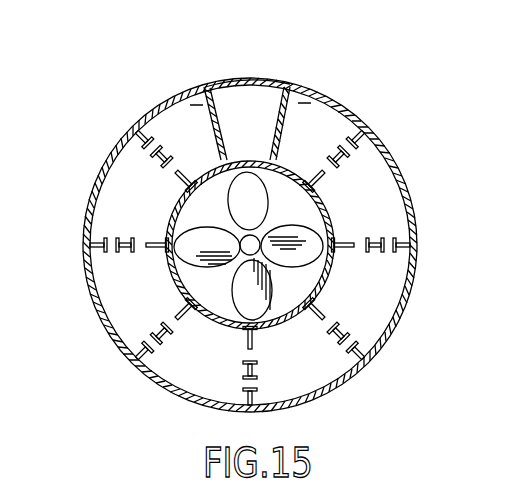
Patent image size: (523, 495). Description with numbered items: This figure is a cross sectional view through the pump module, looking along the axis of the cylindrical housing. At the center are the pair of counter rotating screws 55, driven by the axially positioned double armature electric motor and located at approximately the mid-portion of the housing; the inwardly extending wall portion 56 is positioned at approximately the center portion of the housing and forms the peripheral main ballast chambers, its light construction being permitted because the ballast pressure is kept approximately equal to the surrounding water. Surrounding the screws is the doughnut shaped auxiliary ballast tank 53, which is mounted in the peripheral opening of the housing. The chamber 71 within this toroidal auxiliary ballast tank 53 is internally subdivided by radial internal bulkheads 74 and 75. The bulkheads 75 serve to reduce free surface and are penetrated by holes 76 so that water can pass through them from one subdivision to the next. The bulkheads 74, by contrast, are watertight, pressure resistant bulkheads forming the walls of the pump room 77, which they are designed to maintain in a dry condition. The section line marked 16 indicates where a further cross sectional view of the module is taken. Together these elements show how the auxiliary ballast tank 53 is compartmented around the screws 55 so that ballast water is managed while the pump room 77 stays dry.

The section line 16- 16 is at (200, 131).
The auxiliary ballast tank 53 is at (372, 120).
The counter rotating screws 55 is at (248, 245).
The inwardly extending wall portion 56 is at (235, 289).
The chamber 71 is at (100, 200).
The bulkheads 74 is at (273, 142).
The bulkheads 75 is at (367, 242).
The holes 76 is at (348, 146).
The pump room 77 is at (237, 90).